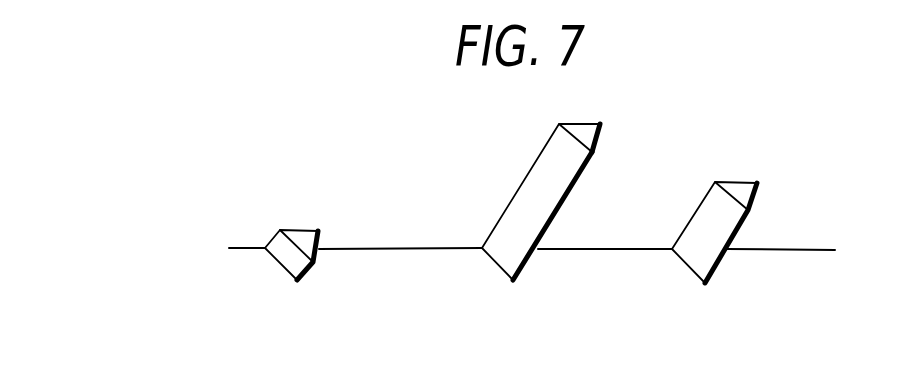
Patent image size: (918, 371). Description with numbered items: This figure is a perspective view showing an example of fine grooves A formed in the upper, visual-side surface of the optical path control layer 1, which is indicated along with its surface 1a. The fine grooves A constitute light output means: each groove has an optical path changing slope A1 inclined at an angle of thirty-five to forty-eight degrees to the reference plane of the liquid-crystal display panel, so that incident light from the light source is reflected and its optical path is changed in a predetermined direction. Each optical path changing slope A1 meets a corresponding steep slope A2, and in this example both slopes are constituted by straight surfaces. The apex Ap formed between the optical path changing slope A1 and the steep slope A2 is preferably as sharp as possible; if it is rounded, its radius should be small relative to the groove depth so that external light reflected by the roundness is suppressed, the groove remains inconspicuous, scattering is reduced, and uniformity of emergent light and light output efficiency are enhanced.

The fine groove A is at (566, 225).
The optical path changing slope A1 is at (574, 137).
The steep slope A2 is at (601, 128).
The apex Ap is at (531, 258).
The optical path control layer 1 is at (768, 229).
The optical axis 1a is at (808, 250).